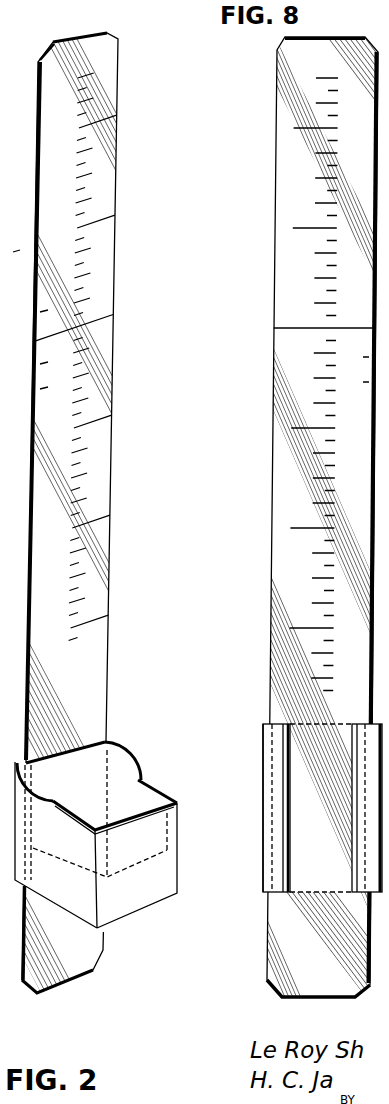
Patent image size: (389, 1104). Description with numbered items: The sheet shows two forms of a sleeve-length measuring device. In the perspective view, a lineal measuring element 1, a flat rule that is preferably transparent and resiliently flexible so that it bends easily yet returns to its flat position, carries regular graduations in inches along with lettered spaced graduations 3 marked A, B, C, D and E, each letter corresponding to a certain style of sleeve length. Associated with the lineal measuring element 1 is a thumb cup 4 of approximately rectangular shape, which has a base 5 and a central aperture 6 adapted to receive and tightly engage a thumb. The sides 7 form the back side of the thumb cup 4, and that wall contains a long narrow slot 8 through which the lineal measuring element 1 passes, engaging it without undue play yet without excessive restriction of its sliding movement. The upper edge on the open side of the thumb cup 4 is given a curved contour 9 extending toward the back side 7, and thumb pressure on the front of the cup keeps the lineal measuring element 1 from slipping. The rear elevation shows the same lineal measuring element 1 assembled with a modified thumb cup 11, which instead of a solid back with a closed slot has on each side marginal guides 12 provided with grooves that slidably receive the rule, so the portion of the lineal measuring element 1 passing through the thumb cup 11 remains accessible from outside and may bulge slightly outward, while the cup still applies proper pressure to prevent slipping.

In FIG. 2, the lineal measuring element 1 is at (104, 88).
In FIG. 8, the lineal measuring element 1 is at (283, 101).
In FIG. 2, the lettered spaced graduations 3 is at (10, 253).
In FIG. 2, the thumb cup 4 is at (157, 791).
In FIG. 2, the base 5 is at (147, 897).
In FIG. 2, the central aperture 6 is at (100, 808).
In FIG. 2, the sides 7 is at (25, 783).
In FIG. 2, the long narrow slot 8 is at (108, 741).
In FIG. 2, the curved contour 9 is at (138, 767).
In FIG. 8, the thumb cup 11 is at (266, 797).
In FIG. 8, the marginal guides 12 is at (265, 858).